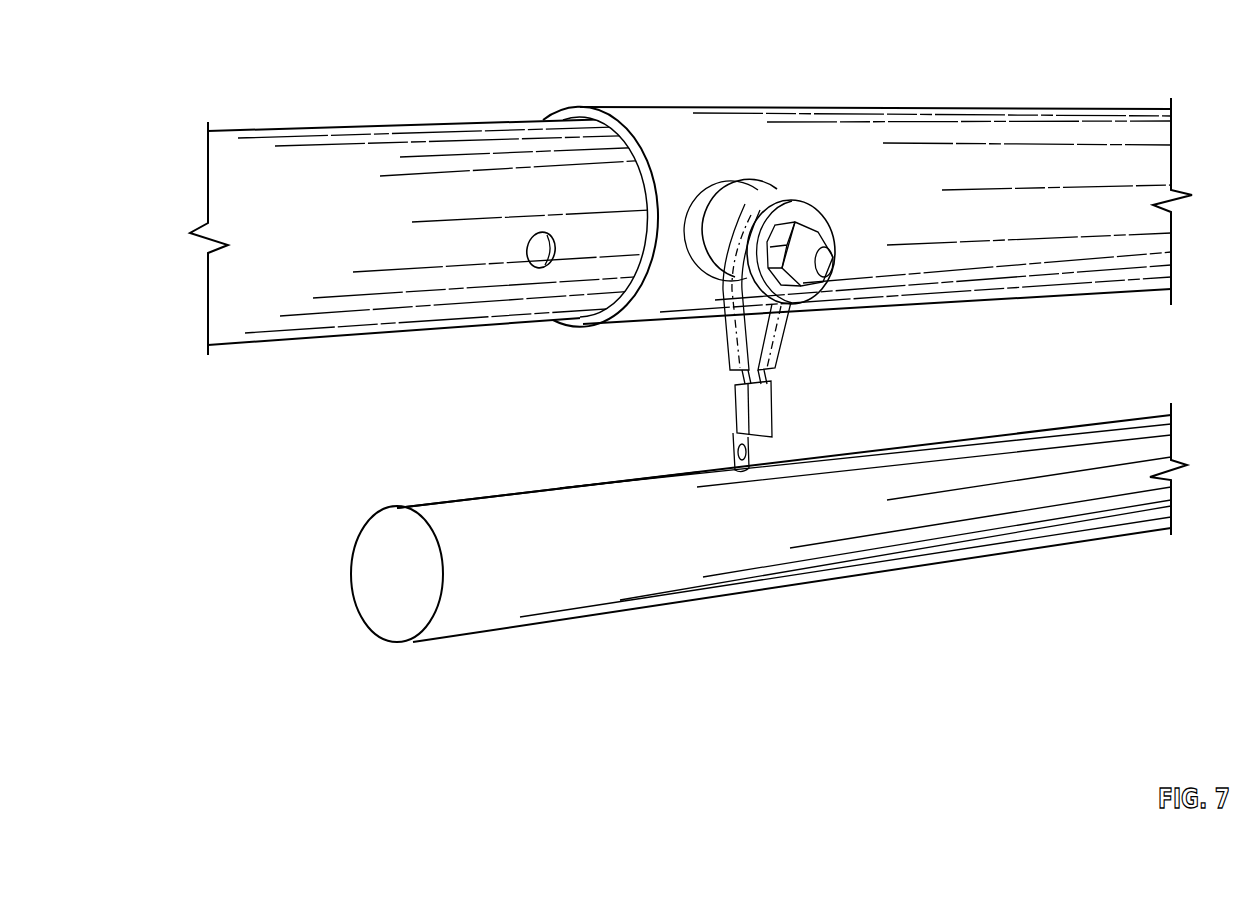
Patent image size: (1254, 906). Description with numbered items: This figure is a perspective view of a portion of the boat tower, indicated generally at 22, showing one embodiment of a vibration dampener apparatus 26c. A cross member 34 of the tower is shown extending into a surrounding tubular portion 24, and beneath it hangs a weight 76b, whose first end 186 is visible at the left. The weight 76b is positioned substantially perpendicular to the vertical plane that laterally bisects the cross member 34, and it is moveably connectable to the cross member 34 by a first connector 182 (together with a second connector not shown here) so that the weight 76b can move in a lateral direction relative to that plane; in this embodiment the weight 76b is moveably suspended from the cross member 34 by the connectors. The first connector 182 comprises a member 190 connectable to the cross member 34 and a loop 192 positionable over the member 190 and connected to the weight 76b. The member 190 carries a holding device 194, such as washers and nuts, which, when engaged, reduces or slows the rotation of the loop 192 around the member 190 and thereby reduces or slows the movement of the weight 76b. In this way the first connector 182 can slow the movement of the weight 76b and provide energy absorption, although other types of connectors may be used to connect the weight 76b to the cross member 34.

The hanger assembly 22 is at (797, 60).
The outer tube 24 is at (1060, 108).
The cross member 34 is at (668, 152).
The holding device 194 is at (812, 235).
The member 190 is at (830, 262).
The loop 192 is at (723, 342).
The first connector 182 is at (780, 363).
The weight 76b is at (452, 515).
The first end 186 is at (397, 595).
The vibration dampener apparatus 26c is at (868, 578).